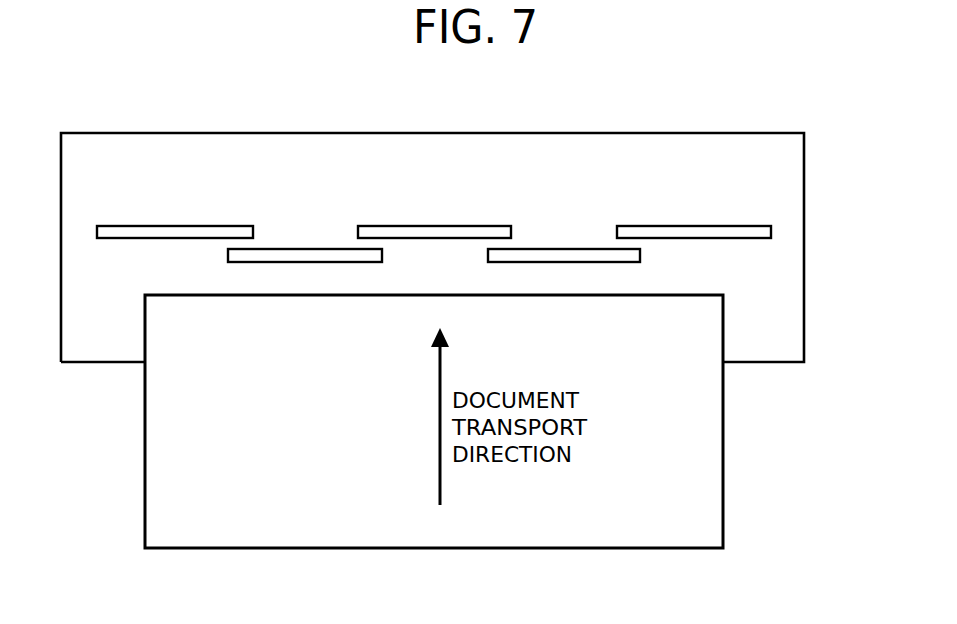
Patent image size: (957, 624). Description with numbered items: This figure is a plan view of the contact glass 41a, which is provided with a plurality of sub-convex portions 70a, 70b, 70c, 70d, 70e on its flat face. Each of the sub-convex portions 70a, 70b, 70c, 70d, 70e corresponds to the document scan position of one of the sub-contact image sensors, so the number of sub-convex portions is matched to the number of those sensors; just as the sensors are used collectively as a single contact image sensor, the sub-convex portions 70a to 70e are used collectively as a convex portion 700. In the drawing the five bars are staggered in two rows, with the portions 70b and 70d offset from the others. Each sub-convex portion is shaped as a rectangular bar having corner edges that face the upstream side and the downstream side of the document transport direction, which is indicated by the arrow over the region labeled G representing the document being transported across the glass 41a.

The contact glass 41a is at (405, 133).
The document G is at (420, 548).
The sub-convex portion 70a is at (187, 225).
The sub-convex portion 70b is at (297, 248).
The sub-convex portion 70c is at (447, 225).
The sub-convex portion 70d is at (557, 248).
The sub-convex portion 70e is at (707, 225).
The convex portion 700 is at (779, 230).